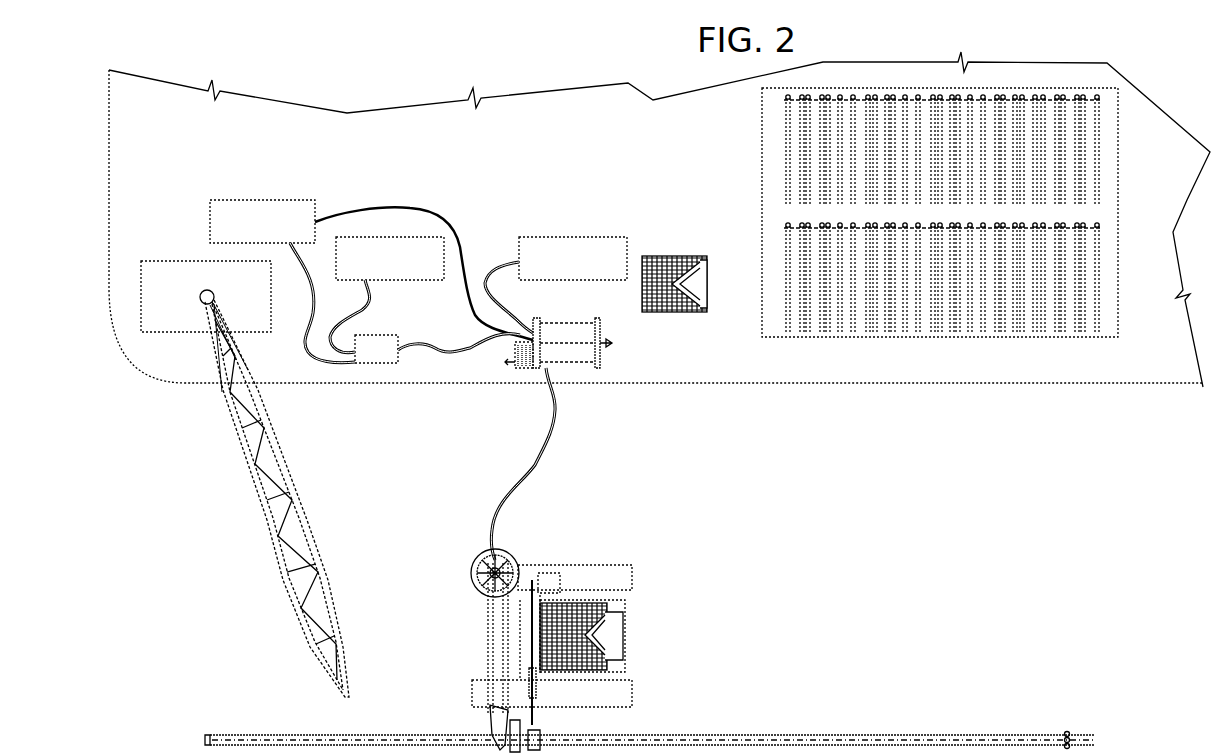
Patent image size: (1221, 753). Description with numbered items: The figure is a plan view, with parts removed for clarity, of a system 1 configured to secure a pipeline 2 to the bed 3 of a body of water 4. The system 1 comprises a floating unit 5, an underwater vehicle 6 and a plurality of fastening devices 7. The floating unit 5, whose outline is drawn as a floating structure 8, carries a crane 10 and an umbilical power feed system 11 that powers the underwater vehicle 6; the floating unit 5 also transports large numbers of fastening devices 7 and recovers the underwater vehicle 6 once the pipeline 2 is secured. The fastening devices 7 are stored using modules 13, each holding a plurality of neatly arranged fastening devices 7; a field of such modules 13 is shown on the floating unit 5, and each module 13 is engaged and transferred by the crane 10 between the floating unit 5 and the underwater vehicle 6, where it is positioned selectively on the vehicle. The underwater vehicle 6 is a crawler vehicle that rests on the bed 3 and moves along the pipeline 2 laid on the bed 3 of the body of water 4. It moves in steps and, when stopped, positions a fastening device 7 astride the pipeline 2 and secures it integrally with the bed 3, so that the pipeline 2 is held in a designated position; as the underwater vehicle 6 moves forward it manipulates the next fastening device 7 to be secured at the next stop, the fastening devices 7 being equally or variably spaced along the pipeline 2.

The system 1 is at (1157, 77).
The pipeline 2 is at (770, 735).
The bed 3 is at (858, 680).
The body of water 4 is at (963, 595).
The floating unit 5 is at (1023, 53).
The underwater vehicle 6 is at (600, 624).
The fastening device 7 is at (598, 603).
The floating structure 8 is at (123, 134).
The crane 10 is at (237, 513).
The umbilical power feed system 11 is at (570, 372).
The module 13 is at (977, 83).